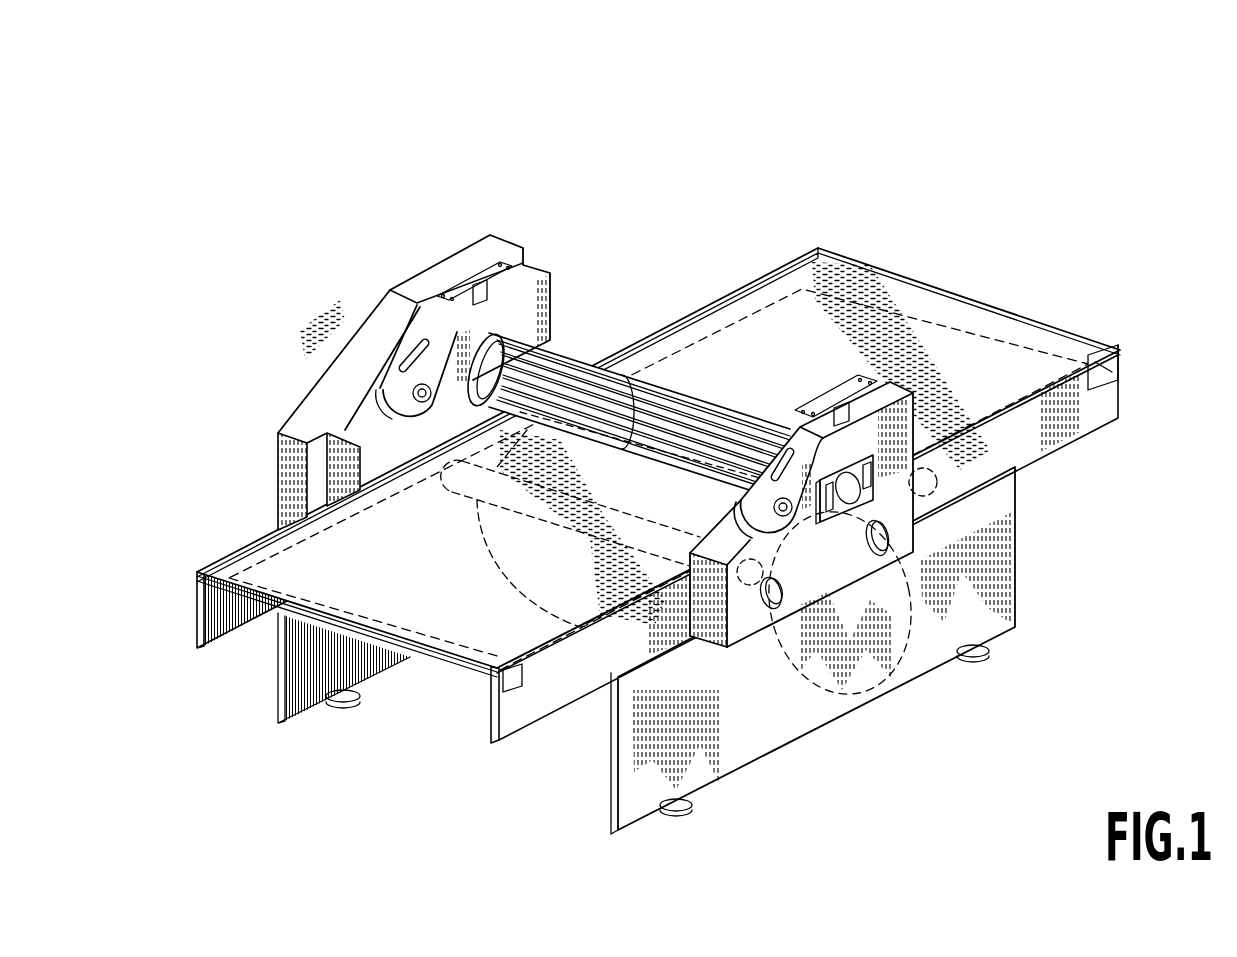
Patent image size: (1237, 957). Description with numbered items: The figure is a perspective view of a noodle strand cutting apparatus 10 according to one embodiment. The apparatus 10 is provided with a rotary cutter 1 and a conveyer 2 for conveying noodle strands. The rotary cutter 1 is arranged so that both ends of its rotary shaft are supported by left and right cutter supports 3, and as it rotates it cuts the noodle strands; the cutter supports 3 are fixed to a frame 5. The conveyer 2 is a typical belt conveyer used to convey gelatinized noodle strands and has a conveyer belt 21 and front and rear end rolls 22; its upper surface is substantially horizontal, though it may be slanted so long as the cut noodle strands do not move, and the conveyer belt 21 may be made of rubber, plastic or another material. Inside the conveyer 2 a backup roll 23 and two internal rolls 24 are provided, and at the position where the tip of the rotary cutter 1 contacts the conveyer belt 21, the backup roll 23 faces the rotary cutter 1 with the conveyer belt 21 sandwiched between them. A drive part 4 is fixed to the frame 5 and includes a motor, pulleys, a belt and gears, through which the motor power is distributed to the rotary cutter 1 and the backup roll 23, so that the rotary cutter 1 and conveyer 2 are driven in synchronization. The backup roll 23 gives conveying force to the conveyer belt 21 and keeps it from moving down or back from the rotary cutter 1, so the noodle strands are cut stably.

The noodle strand cutting apparatus 10 is at (651, 461).
The rotary cutter 1 is at (575, 352).
The conveyer 2 is at (651, 506).
The conveyer belt 21 is at (386, 588).
The end rolls 22 is at (995, 328).
The cutter supports 3 is at (543, 300).
The drive part 4 is at (350, 363).
The frame 5 is at (950, 608).
The backup roll 23 is at (862, 690).
The internal rolls 24 is at (1017, 595).